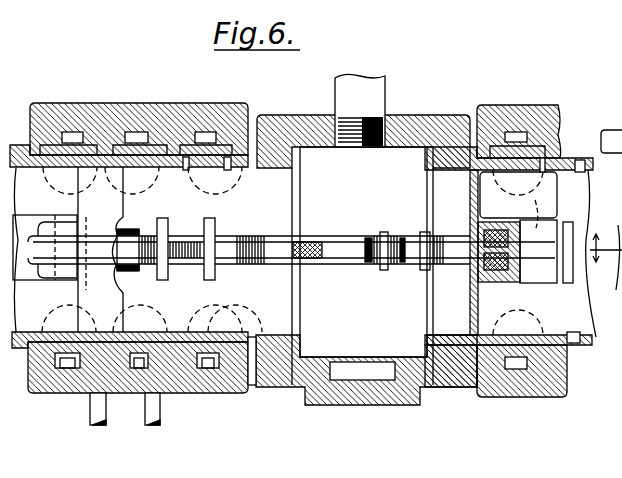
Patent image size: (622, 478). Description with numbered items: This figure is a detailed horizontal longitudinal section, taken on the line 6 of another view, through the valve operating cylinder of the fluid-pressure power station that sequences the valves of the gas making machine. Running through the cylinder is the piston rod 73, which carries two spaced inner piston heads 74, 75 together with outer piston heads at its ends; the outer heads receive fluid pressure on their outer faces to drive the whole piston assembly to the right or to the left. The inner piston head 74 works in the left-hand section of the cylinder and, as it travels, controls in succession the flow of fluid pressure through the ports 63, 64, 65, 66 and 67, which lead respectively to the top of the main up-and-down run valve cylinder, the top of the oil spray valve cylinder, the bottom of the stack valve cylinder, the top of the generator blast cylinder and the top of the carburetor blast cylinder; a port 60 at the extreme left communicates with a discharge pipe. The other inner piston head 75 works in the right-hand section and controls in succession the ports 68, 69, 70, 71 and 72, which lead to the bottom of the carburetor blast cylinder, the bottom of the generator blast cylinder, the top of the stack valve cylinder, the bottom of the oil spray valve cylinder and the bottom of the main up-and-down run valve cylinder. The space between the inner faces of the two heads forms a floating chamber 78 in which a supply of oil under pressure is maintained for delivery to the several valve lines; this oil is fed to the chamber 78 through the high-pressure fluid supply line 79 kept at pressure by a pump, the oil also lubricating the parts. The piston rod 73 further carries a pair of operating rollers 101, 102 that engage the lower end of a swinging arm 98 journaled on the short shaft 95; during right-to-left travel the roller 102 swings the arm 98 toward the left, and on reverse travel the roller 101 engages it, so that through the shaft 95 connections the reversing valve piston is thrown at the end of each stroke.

The section line 6 is at (606, 257).
The port 60 is at (62, 215).
The port 63 is at (164, 218).
The port 64 is at (185, 170).
The port 65 is at (216, 222).
The port 66 is at (252, 335).
The port 67 is at (228, 170).
The port 68 is at (580, 172).
The port 69 is at (575, 332).
The port 70 is at (569, 224).
The port 71 is at (542, 172).
The port 72 is at (538, 220).
The piston rod 73 is at (356, 237).
The inner piston head 74 is at (100, 249).
The inner piston head 75 is at (458, 252).
The floating chamber 78 is at (363, 252).
The high-pressure fluid supply line 79 is at (372, 86).
The short shaft 95 is at (619, 130).
The swinging arm 98 is at (268, 240).
The operating roller 101 is at (186, 240).
The operating roller 102 is at (386, 236).